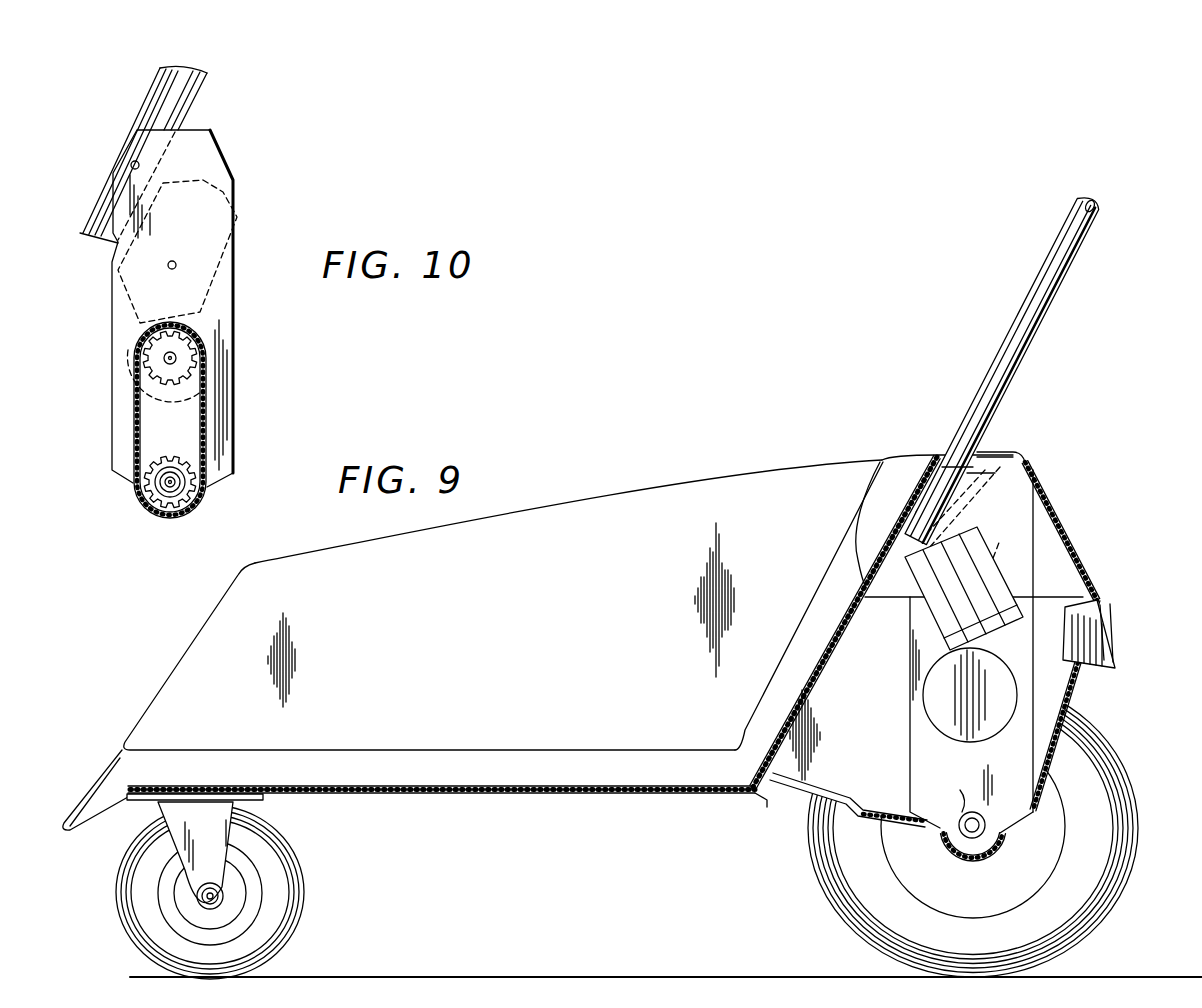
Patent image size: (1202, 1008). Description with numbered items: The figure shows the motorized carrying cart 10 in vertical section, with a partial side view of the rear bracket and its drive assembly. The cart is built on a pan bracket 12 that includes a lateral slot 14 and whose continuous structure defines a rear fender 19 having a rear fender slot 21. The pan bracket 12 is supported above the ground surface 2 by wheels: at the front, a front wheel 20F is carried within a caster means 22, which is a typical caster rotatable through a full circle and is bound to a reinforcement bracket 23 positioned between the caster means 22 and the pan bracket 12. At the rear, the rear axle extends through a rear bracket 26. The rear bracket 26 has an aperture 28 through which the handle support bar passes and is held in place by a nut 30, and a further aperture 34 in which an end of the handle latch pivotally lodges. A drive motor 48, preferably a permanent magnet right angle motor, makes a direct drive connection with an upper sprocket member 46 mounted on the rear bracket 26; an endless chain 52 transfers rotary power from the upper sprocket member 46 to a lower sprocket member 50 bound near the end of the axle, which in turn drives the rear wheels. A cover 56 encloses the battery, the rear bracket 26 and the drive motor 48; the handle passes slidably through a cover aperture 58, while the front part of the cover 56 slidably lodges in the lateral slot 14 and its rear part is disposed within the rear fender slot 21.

In FIG. 9, the ground surface 2 is at (618, 977).
In FIG. 9, the motorized carrying cart 10 is at (572, 468).
In FIG. 9, the pan bracket 12 is at (345, 797).
In FIG. 9, the lateral slot 14 is at (763, 808).
In FIG. 9, the rear fender 19 is at (1108, 636).
In FIG. 9, the front wheel 20F is at (282, 902).
In FIG. 9, the rear fender slot 21 is at (1089, 648).
In FIG. 9, the caster means 22 is at (226, 834).
In FIG. 9, the reinforcement bracket 23 is at (147, 803).
In FIG. 9, the rear bracket 26 is at (952, 821).
In FIG. 9, the aperture 28 is at (1053, 371).
In FIG. 10, the aperture 28 is at (140, 163).
In FIG. 9, the nut 30 is at (1017, 487).
In FIG. 10, the aperture 34 is at (176, 265).
In FIG. 10, the upper sprocket member 46 is at (187, 362).
In FIG. 9, the drive motor 48 is at (1012, 566).
In FIG. 9, the lower sprocket member 50 is at (958, 852).
In FIG. 10, the lower sprocket member 50 is at (155, 492).
In FIG. 9, the endless chain 52 is at (942, 843).
In FIG. 10, the endless chain 52 is at (208, 423).
In FIG. 9, the cover 56 is at (880, 460).
In FIG. 9, the cover aperture 58 is at (937, 500).